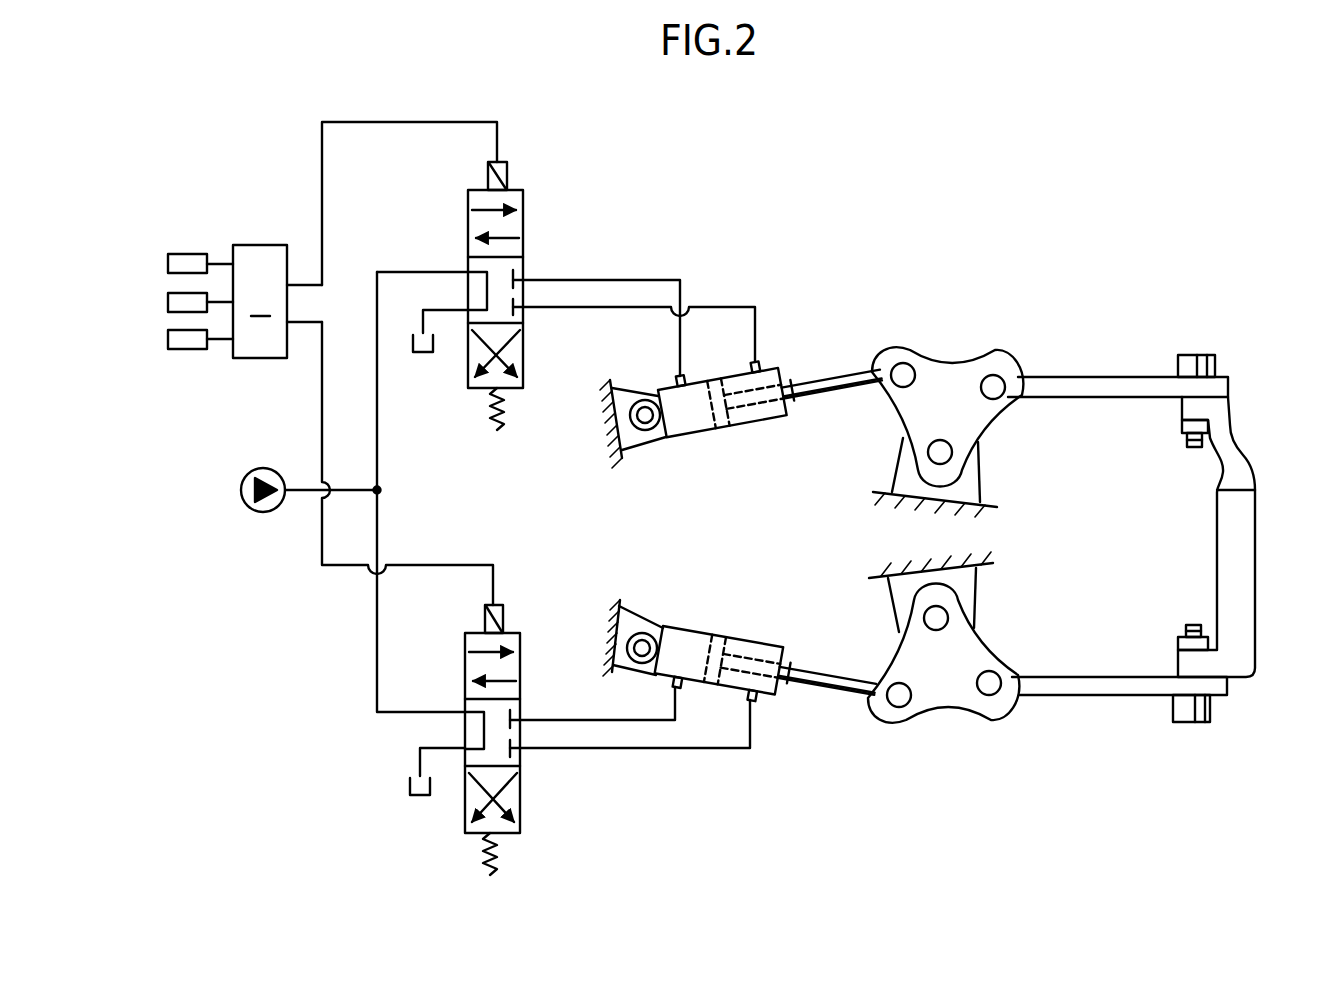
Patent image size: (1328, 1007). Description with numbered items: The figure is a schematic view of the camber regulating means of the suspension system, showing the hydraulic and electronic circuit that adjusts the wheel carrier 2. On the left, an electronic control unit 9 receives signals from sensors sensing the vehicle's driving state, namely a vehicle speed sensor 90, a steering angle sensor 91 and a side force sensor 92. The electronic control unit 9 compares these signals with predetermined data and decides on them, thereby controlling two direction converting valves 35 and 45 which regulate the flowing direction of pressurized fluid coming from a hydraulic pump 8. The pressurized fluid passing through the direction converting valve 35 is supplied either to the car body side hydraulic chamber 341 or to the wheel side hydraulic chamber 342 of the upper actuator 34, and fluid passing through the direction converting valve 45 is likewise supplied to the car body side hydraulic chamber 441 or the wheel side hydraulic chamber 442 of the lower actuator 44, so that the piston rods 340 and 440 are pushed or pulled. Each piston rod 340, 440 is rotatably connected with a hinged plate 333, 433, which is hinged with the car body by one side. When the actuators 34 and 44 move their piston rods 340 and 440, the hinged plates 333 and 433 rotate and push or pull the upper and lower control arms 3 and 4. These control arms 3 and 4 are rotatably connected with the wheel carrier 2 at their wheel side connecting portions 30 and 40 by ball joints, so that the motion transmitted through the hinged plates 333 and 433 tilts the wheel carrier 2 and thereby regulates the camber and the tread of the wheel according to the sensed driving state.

The wheel carrier 2 is at (1247, 560).
The upper control arm 3 is at (1086, 385).
The connecting portion 30 is at (1180, 352).
The lower control arm 4 is at (1095, 698).
The connecting portion 40 is at (1190, 725).
The hydraulic pump 8 is at (262, 513).
The electronic control unit 9 is at (277, 301).
The vehicle speed sensor 90 is at (168, 264).
The steering angle sensor 91 is at (168, 302).
The side force sensor 92 is at (168, 339).
The actuator 34 is at (749, 395).
The piston rod 340 is at (835, 378).
The car body side hydraulic chamber 341 is at (688, 422).
The wheel side hydraulic chamber 342 is at (760, 424).
The direction converting valve 35 is at (522, 176).
The hinged plate 333 is at (975, 420).
The actuator 44 is at (747, 633).
The piston rod 440 is at (830, 672).
The car body side hydraulic chamber 441 is at (685, 636).
The wheel side hydraulic chamber 442 is at (762, 650).
The direction converting valve 45 is at (517, 611).
The hinged plate 433 is at (975, 645).